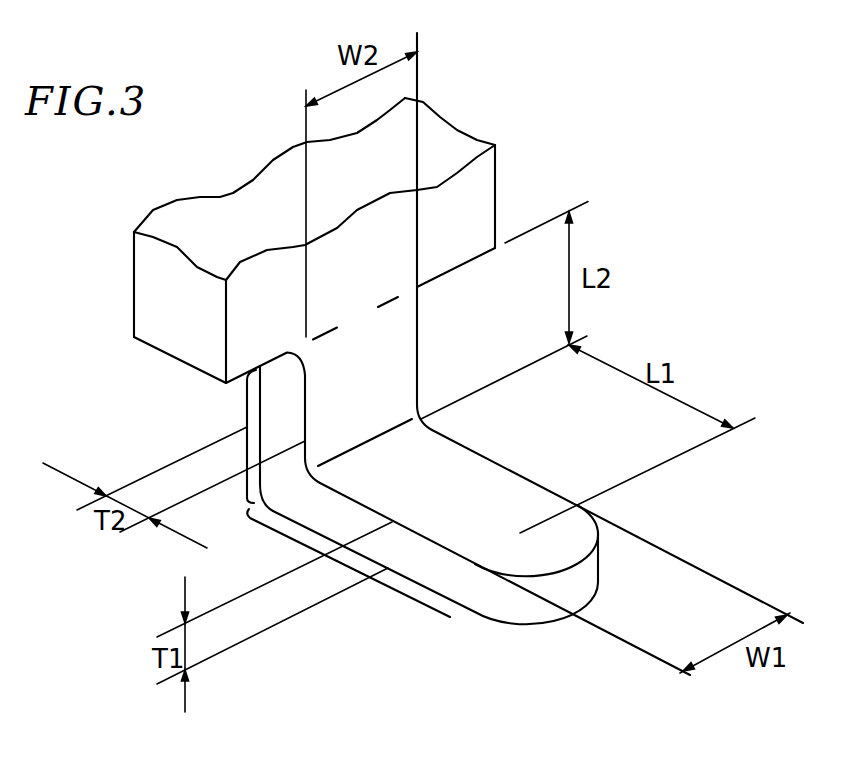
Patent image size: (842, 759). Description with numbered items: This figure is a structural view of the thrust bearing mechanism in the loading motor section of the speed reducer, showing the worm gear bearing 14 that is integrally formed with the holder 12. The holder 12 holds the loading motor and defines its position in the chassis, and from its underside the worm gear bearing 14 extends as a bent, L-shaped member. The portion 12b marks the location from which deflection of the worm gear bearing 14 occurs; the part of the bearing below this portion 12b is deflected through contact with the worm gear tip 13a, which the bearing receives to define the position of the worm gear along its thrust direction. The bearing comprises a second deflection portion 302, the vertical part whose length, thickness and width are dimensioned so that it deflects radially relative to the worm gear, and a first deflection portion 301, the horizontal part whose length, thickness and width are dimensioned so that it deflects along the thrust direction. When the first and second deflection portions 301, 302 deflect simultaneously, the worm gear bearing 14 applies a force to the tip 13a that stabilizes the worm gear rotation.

The holder 12 is at (172, 228).
The deflection origin portion of the worm gear bearing 12b is at (418, 250).
The worm gear bearing 14 is at (433, 572).
The worm gear tip 13a is at (520, 533).
The first deflection portion 301 is at (347, 561).
The second deflection portion 302 is at (247, 424).